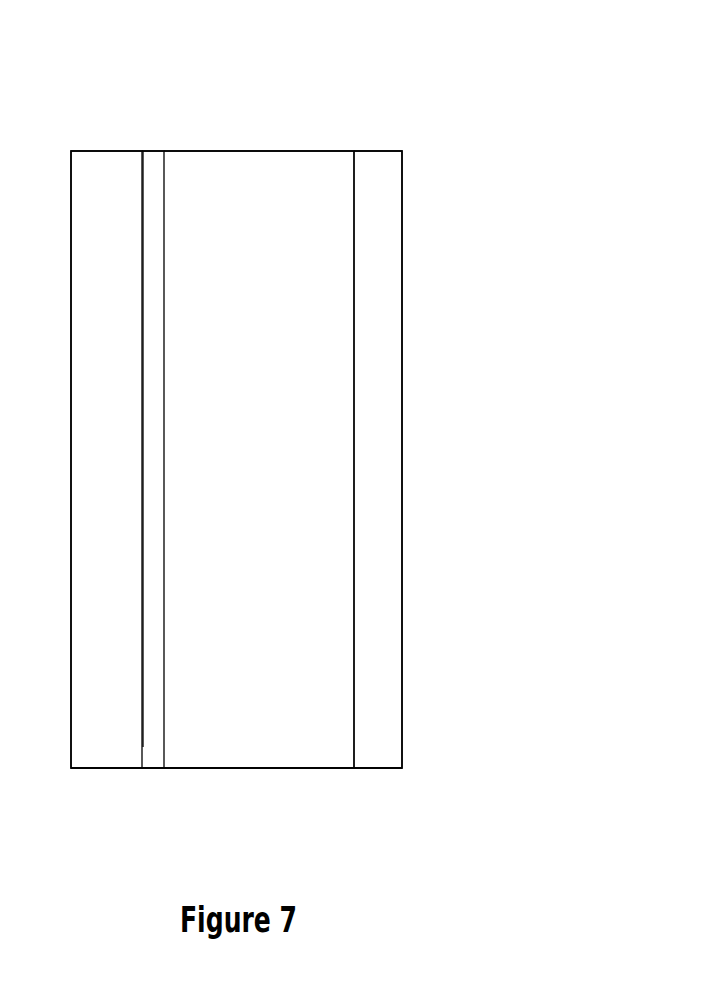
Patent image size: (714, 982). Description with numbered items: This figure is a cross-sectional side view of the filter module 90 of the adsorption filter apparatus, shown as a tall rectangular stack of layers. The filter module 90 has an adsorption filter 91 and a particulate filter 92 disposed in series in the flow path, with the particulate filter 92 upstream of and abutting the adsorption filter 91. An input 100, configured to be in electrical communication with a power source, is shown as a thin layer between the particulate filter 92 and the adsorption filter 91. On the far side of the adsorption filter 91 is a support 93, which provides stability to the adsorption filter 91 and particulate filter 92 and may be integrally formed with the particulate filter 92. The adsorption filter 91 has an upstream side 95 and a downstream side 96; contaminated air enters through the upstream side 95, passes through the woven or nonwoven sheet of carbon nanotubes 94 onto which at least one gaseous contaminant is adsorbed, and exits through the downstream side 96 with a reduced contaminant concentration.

The filter module 90 is at (438, 63).
The adsorption filter 91 is at (288, 168).
The particulate filter 92 is at (113, 162).
The support 93 is at (383, 677).
The woven or nonwoven sheet of carbon nanotubes 94 is at (270, 754).
The upstream side 95 is at (164, 313).
The downstream side 96 is at (354, 461).
The input 100 is at (152, 158).